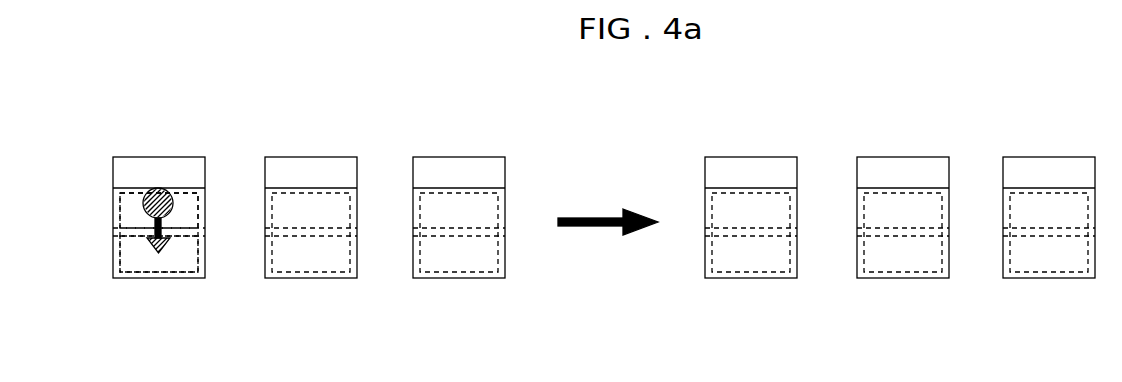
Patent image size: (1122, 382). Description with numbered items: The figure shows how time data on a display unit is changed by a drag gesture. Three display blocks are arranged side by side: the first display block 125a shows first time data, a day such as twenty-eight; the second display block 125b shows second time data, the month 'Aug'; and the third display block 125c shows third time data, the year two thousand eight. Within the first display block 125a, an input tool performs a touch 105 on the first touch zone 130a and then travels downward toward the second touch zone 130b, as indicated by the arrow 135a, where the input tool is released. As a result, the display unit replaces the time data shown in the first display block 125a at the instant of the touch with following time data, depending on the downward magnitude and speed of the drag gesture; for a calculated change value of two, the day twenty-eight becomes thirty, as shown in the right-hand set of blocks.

The first display block 125a is at (158, 279).
The second display block 125b is at (310, 279).
The third display block 125c is at (458, 279).
The first touch zone 130a is at (119, 200).
The second touch zone 130b is at (120, 270).
The touch 105 is at (172, 212).
The arrow 135a is at (164, 238).